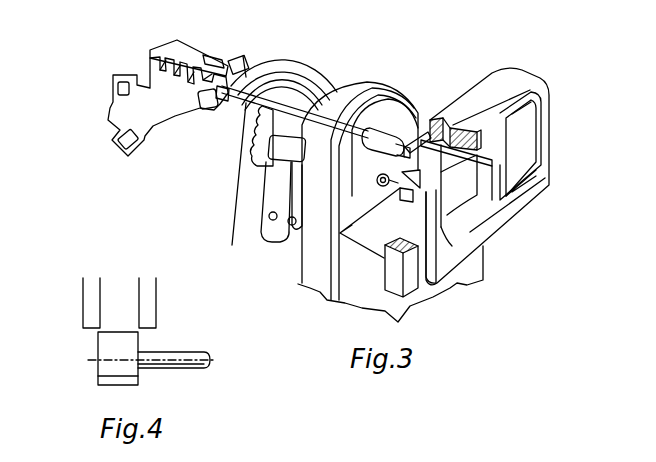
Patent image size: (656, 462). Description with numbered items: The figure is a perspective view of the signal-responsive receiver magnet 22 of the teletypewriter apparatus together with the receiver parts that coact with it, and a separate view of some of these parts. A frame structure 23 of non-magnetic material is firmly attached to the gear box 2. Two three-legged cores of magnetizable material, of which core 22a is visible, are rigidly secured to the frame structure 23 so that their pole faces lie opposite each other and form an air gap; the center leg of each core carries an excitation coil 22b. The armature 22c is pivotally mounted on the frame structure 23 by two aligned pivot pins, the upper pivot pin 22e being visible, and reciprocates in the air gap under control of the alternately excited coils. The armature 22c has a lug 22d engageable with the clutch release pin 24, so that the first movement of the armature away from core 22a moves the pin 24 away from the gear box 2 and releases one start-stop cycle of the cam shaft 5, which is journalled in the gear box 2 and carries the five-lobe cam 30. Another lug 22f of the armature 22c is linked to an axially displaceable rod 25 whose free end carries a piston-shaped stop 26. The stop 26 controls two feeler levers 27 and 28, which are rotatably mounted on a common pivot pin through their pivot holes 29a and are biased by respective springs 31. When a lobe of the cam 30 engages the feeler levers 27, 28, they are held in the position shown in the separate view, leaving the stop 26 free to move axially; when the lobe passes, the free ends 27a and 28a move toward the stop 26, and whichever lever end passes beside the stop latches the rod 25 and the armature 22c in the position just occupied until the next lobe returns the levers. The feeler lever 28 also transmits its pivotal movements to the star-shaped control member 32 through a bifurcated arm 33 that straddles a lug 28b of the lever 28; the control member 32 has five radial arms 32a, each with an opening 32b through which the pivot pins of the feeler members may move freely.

In FIG. 3, the gear box 2 is at (403, 110).
In FIG. 3, the cam shaft 5 is at (268, 180).
In FIG. 3, the receiver magnet 22 is at (566, 72).
In FIG. 3, the magnet core 22a is at (457, 247).
In FIG. 3, the excitation coil 22b is at (433, 262).
In FIG. 3, the armature 22c is at (530, 187).
In FIG. 3, the lug 22d is at (412, 200).
In FIG. 3, the pivot pin 22e is at (446, 138).
In FIG. 3, the lug 22f is at (423, 127).
In FIG. 3, the frame structure 23 is at (512, 85).
In FIG. 3, the release pin 24 is at (388, 192).
In FIG. 3, the rod 25 is at (313, 117).
In FIG. 4, the rod 25 is at (162, 370).
In FIG. 3, the piston-shaped stop 26 is at (210, 106).
In FIG. 4, the piston-shaped stop 26 is at (140, 385).
In FIG. 3, the feeler lever 27 is at (284, 68).
In FIG. 3, the free end of feeler lever 27a is at (224, 100).
In FIG. 4, the free end of feeler lever 27a is at (148, 318).
In FIG. 3, the feeler lever 28 is at (261, 63).
In FIG. 3, the free end of feeler lever 28a is at (208, 63).
In FIG. 4, the free end of feeler lever 28a is at (88, 318).
In FIG. 3, the lug 28b is at (244, 64).
In FIG. 3, the pivot holes 29a is at (290, 225).
In FIG. 3, the five-lobe cam 30 is at (257, 160).
In FIG. 3, the spring 31 is at (242, 147).
In FIG. 3, the control member 32 is at (156, 99).
In FIG. 3, the radial arm 32a is at (117, 137).
In FIG. 3, the opening 32b is at (116, 87).
In FIG. 3, the bifurcated arm 33 is at (216, 53).